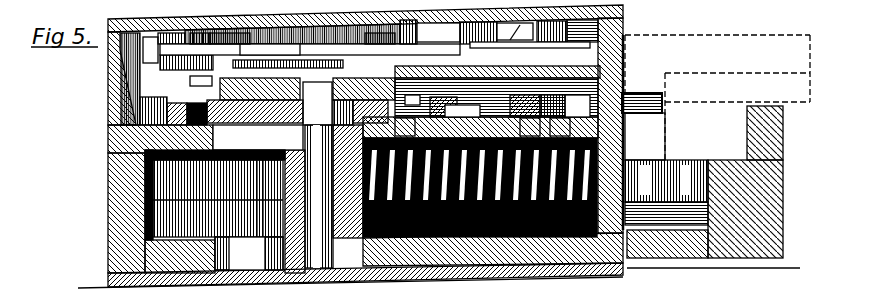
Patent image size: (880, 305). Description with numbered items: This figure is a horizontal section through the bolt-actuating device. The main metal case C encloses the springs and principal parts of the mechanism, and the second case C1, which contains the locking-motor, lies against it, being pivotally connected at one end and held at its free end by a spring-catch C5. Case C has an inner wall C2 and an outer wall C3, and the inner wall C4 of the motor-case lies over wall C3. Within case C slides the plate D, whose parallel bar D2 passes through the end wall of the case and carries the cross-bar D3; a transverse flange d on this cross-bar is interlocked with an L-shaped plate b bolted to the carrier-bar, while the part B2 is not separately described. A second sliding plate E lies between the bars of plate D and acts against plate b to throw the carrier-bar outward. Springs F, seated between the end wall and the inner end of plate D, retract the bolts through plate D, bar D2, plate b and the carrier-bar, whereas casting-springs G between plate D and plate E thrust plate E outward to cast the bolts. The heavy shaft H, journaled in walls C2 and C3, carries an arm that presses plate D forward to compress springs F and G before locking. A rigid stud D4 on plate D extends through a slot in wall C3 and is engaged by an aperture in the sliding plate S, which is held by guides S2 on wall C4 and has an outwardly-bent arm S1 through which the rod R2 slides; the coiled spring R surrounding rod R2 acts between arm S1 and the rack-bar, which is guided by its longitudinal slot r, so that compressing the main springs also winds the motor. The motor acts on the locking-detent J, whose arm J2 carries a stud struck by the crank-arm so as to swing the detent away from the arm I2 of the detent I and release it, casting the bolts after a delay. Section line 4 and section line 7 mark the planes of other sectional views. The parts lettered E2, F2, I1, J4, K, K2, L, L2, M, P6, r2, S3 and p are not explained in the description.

The case C is at (350, 146).
The second case C1 is at (634, 121).
The inner wall C2 is at (425, 280).
The outer wall C3 is at (258, 137).
The inner wall of motor-case C4 is at (100, 66).
The spring-catch C5 is at (405, 128).
The sliding plate D is at (470, 187).
The parallel bar D2 is at (666, 209).
The cross-bar D3 is at (783, 218).
The rigid stud D4 is at (318, 175).
The transverse flange d is at (783, 121).
The sliding plate E is at (440, 191).
The valve port E2 is at (178, 63).
The retracting springs F is at (482, 236).
The piston plate extension F2 is at (443, 236).
The casting springs G is at (530, 128).
The heavy shaft H is at (215, 195).
The detent I is at (567, 37).
The rod head I1 is at (642, 103).
The detent arm I2 is at (525, 106).
The locking-detent J is at (560, 127).
The locking-detent arm J2 is at (480, 117).
The lever arm J4 is at (462, 99).
The valve block K is at (255, 111).
The valve block extension K2 is at (360, 112).
The passage L is at (144, 91).
The passage branch L2 is at (543, 8).
The sleeve M is at (480, 128).
The pawl P6 is at (496, 97).
The coiled spring R is at (286, 44).
The rod R2 is at (247, 50).
The longitudinal slot r is at (430, 32).
The ratchet pawl r2 is at (496, 33).
The sliding plate S is at (225, 50).
The outwardly-bent arm S1 is at (210, 55).
The guides S2 is at (420, 27).
The shaft bushing S3 is at (260, 89).
The L-shaped plate b is at (717, 68).
The beam bracket B2 is at (737, 116).
The pin p is at (620, 53).
The section line 4 4 is at (118, 77).
The section line 7 7 is at (145, 199).